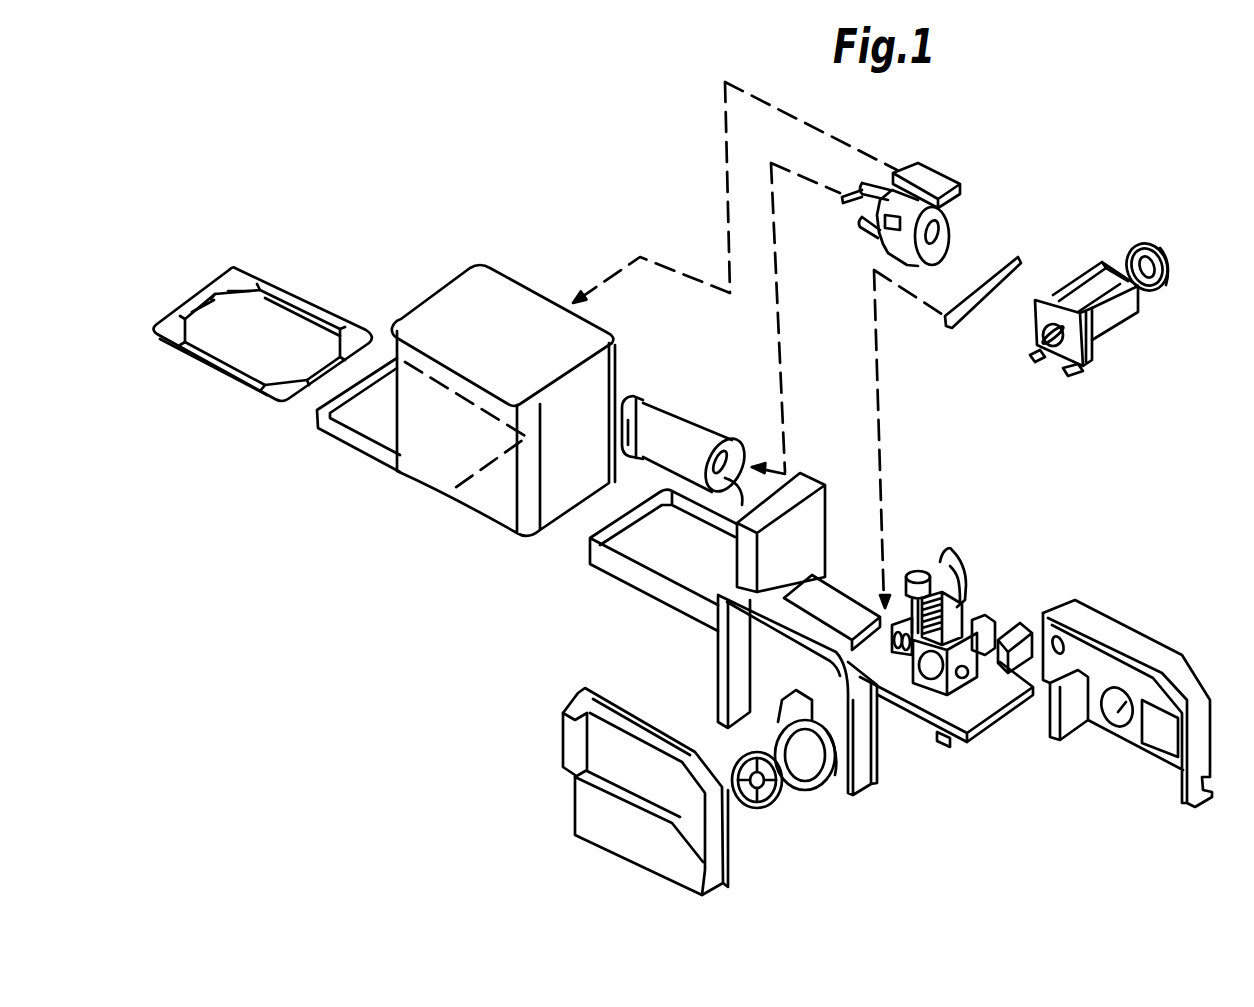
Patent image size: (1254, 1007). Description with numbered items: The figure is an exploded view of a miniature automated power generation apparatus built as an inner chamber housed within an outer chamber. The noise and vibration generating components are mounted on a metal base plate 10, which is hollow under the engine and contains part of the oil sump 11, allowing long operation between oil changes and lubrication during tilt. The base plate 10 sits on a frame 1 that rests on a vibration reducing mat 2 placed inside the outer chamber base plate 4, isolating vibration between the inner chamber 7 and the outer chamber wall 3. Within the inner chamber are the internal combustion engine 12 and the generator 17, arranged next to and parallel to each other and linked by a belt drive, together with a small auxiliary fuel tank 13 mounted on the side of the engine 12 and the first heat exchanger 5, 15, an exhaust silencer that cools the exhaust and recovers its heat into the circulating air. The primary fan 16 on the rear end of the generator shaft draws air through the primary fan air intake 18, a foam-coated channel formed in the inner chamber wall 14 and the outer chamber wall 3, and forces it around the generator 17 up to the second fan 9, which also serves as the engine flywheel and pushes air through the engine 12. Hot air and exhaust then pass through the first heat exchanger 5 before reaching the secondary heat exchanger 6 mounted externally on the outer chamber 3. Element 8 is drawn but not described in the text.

The frame 1 is at (263, 299).
The vibration reducing mat 2 is at (422, 360).
The outer chamber wall 3 is at (503, 369).
The outer chamber base plate 4 is at (614, 560).
The first heat exchanger 5 is at (823, 344).
The secondary heat exchanger 6 is at (784, 492).
The inner chamber 7 is at (592, 791).
The wall 8 is at (726, 695).
The second fan 9 is at (788, 790).
The base plate 10 is at (946, 741).
The oil sump 11 is at (832, 566).
The internal combustion engine 12 is at (962, 585).
The auxiliary fuel tank 13 is at (1054, 569).
The inner chamber wall 14 is at (1138, 697).
The first heat exchanger 15 is at (960, 169).
The primary fan 16 is at (1173, 244).
The generator 17 is at (1119, 348).
The primary fan air intake 18 is at (1116, 716).